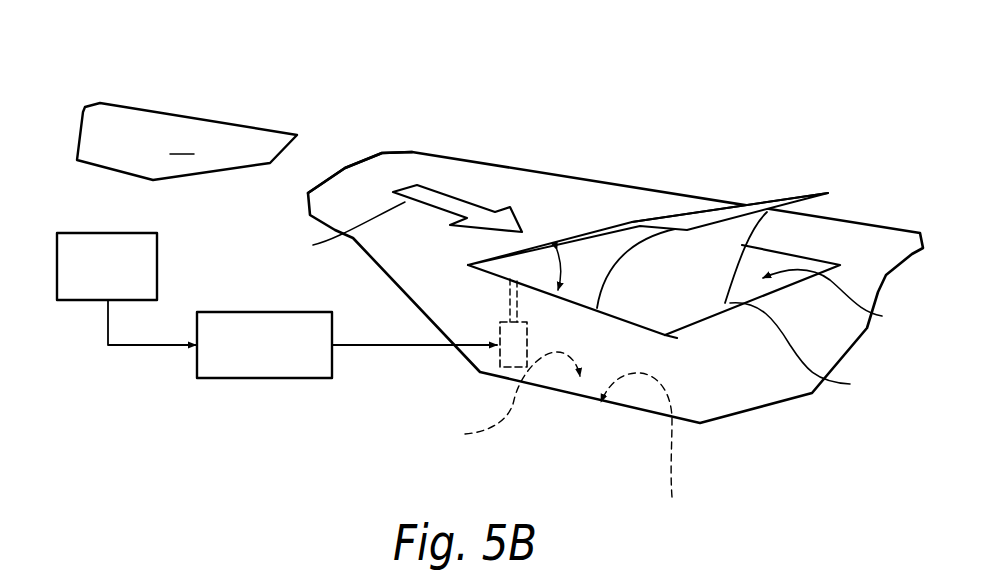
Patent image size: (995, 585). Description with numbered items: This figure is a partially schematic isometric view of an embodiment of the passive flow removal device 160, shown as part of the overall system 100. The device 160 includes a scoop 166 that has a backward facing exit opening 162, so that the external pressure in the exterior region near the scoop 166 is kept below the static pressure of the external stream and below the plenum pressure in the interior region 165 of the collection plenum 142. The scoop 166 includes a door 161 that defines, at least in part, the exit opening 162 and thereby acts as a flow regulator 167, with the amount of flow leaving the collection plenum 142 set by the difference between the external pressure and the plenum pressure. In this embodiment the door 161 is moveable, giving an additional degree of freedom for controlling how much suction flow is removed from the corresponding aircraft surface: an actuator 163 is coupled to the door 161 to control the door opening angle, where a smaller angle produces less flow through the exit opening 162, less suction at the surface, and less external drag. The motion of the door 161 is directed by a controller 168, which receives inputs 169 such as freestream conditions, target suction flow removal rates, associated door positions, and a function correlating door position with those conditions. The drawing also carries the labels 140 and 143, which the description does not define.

The system 100 is at (322, 463).
The pressure sensor 140 is at (154, 96).
The collection plenum 142 is at (841, 302).
The wing surface 143 is at (358, 182).
The passive flow removal device 160 is at (700, 170).
The door 161 is at (813, 190).
The exit opening 162 is at (808, 352).
The actuator 163 is at (497, 323).
The interior region 165 is at (646, 448).
The scoop 166 is at (582, 212).
The flow regulator 167 is at (781, 186).
The controller 168 is at (247, 380).
The inputs 169 is at (123, 233).